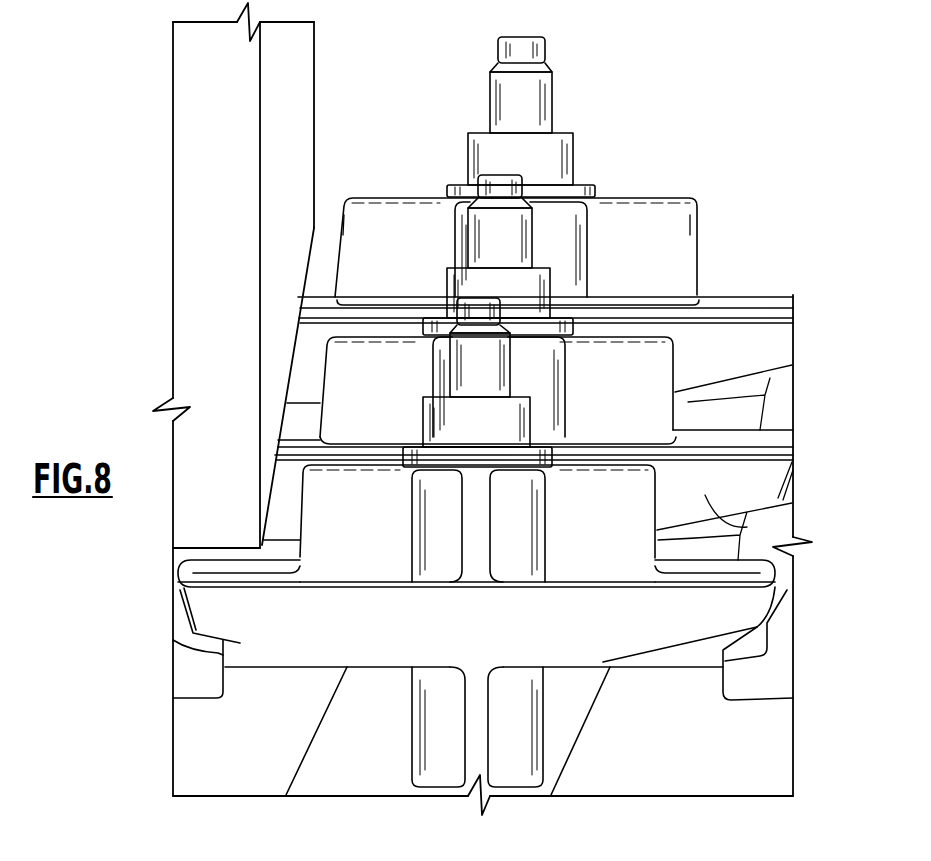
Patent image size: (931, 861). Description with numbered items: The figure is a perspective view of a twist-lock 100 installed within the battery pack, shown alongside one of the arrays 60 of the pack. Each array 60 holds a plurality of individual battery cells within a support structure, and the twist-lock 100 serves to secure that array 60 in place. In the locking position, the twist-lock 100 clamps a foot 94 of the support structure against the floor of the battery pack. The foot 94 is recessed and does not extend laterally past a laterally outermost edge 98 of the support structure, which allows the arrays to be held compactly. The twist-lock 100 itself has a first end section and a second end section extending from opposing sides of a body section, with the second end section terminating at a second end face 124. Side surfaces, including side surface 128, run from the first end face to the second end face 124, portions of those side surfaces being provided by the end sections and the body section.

The array 60 is at (190, 122).
The laterally outermost edge 98 is at (298, 129).
The twist-lock 100 is at (660, 417).
The second end face 124 is at (783, 474).
The side surface 128 is at (792, 503).
The foot 94 is at (190, 680).